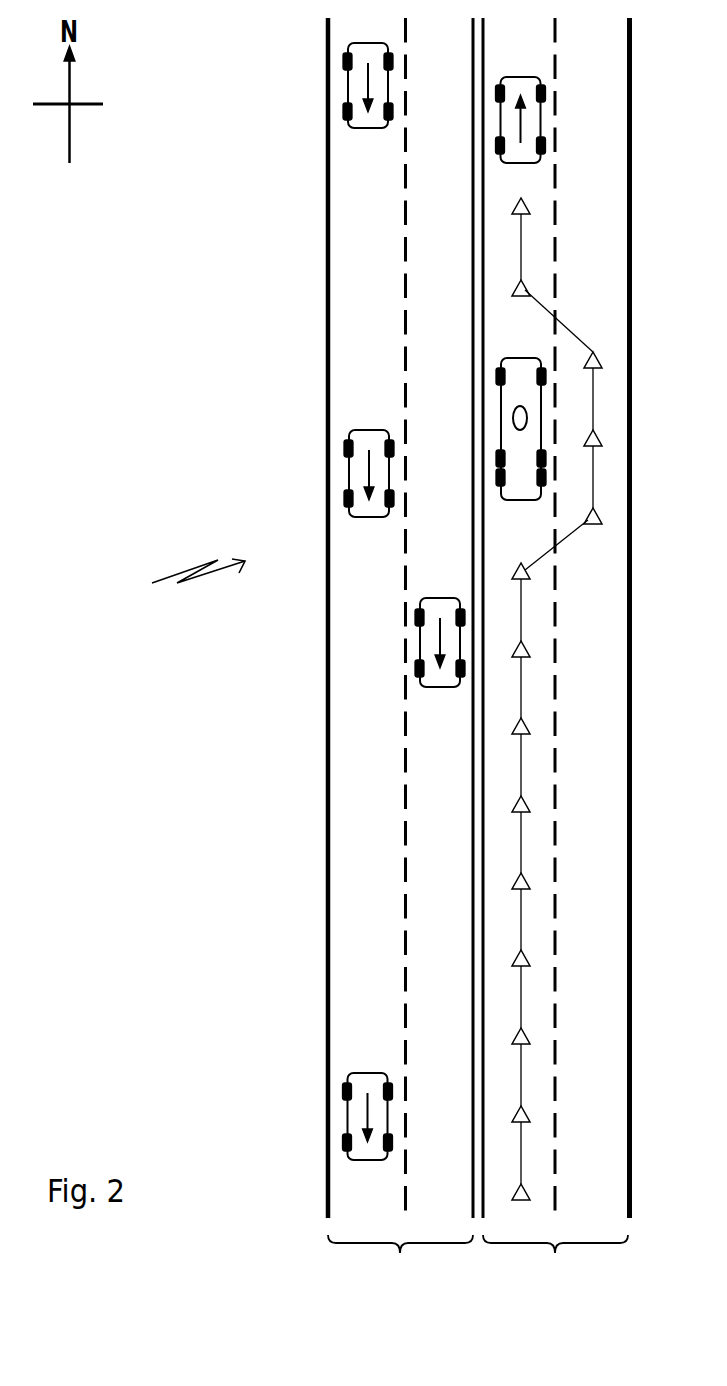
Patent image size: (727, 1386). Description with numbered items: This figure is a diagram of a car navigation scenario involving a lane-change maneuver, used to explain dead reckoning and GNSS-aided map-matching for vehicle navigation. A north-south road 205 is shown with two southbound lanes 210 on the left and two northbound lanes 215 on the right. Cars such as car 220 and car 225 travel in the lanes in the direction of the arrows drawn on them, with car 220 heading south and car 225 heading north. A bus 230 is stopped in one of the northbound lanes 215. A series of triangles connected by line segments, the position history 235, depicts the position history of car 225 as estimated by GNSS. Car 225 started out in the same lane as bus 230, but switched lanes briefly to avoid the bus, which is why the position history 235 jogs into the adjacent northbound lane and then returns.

The north-south road 205 is at (176, 581).
The southbound lanes 210 is at (400, 654).
The northbound lanes 215 is at (556, 654).
The car 220 is at (367, 430).
The car 225 is at (522, 77).
The bus 230 is at (522, 358).
The position history 235 is at (523, 802).